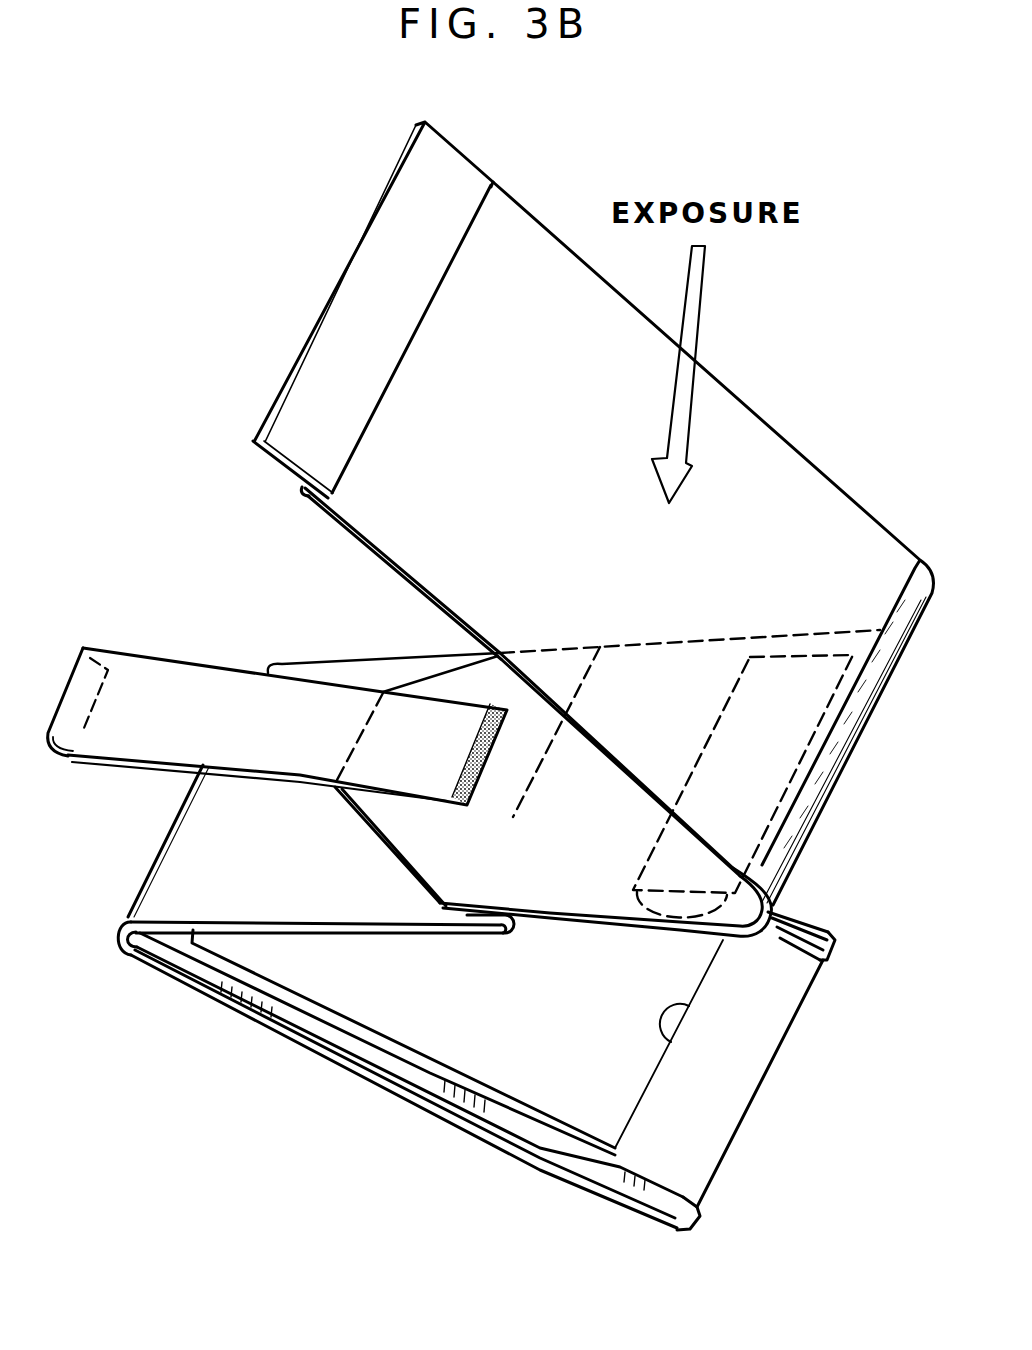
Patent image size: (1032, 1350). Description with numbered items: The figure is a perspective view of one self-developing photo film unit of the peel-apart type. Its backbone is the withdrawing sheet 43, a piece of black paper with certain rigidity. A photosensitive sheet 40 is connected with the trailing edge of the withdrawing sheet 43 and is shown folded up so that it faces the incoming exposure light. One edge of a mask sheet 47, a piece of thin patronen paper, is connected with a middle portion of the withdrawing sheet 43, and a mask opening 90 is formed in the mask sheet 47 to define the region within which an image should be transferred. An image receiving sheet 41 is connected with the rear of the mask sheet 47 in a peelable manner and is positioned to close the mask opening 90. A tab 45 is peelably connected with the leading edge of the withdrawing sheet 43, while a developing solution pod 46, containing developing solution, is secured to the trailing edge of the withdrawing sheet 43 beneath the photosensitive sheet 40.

The photosensitive sheet 40 is at (811, 478).
The image receiving sheet 41 is at (422, 1043).
The withdrawing sheet 43 is at (587, 888).
The tab 45 is at (177, 677).
The developing solution pod 46 is at (777, 770).
The mask sheet 47 is at (345, 888).
The mask opening 90 is at (693, 1010).